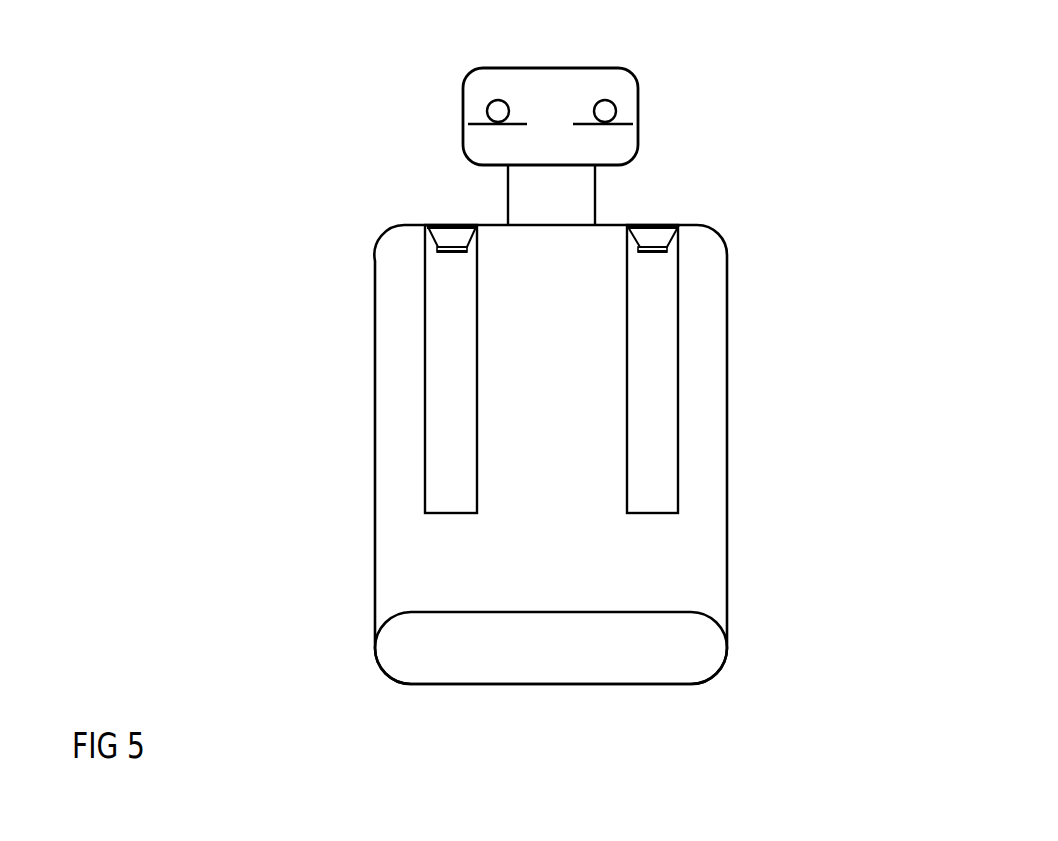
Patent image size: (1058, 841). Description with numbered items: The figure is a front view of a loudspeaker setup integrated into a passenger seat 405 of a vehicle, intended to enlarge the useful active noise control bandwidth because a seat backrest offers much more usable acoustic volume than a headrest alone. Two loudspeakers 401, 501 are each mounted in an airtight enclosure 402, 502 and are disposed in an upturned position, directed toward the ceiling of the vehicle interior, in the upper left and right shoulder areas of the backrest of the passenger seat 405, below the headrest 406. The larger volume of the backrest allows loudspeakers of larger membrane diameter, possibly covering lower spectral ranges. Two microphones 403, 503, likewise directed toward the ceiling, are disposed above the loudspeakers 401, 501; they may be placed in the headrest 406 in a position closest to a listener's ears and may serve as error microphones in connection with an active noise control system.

The loudspeaker 401 is at (425, 236).
The enclosure 402 is at (425, 433).
The microphone 403 is at (489, 104).
The passenger seat 405 is at (568, 608).
The headrest 406 is at (638, 117).
The loudspeaker 501 is at (678, 231).
The enclosure 502 is at (678, 297).
The microphone 503 is at (615, 105).